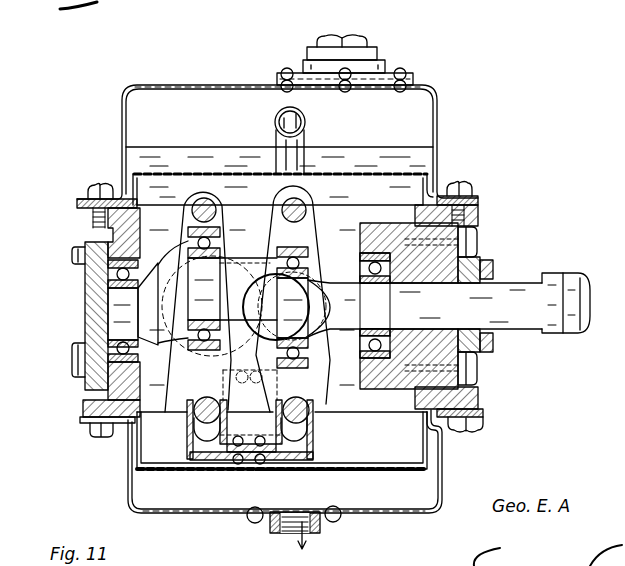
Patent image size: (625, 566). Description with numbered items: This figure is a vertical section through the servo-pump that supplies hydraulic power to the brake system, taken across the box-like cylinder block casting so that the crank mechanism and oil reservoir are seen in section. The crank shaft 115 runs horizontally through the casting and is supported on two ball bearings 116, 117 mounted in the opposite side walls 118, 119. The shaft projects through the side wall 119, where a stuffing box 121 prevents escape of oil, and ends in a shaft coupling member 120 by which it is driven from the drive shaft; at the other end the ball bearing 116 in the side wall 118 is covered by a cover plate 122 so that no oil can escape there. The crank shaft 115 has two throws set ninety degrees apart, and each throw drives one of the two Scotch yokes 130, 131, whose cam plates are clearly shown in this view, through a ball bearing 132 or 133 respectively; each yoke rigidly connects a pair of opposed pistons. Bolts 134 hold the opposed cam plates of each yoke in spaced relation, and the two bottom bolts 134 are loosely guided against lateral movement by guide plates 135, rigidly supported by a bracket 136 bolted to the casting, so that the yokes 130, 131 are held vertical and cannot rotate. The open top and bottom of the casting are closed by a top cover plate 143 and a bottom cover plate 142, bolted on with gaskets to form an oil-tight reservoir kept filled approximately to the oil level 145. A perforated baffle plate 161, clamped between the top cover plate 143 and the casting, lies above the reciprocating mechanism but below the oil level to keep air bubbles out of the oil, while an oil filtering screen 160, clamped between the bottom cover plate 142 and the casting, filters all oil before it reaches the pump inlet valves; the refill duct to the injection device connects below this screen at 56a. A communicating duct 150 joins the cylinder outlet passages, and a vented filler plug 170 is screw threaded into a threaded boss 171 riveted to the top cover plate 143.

The refill duct connection 56a is at (292, 534).
The crank shaft 115 is at (340, 298).
The ball bearing 116 is at (117, 342).
The ball bearing 117 is at (392, 398).
The side wall 118 is at (128, 228).
The side wall 119 is at (478, 210).
The shaft coupling member 120 is at (576, 335).
The stuffing box 121 is at (452, 280).
The cover plate 122 is at (90, 300).
The Scotch yoke 130 is at (323, 365).
The Scotch yoke 131 is at (175, 370).
The ball bearing 132 is at (200, 344).
The ball bearing 133 is at (292, 370).
The bolts 134 is at (212, 205).
The guide plates 135 is at (232, 432).
The bracket 136 is at (283, 457).
The bottom cover plate 142 is at (382, 510).
The top cover plate 143 is at (200, 85).
The oil level 145 is at (180, 146).
The communicating duct 150 is at (300, 122).
The oil filtering screen 160 is at (250, 472).
The perforated baffle plate 161 is at (363, 167).
The filler plug 170 is at (364, 49).
The threaded boss 171 is at (368, 67).